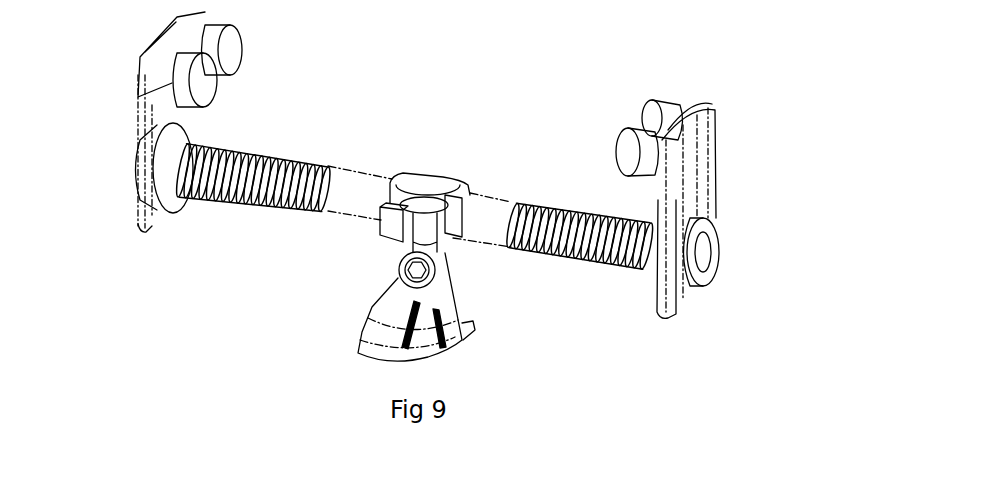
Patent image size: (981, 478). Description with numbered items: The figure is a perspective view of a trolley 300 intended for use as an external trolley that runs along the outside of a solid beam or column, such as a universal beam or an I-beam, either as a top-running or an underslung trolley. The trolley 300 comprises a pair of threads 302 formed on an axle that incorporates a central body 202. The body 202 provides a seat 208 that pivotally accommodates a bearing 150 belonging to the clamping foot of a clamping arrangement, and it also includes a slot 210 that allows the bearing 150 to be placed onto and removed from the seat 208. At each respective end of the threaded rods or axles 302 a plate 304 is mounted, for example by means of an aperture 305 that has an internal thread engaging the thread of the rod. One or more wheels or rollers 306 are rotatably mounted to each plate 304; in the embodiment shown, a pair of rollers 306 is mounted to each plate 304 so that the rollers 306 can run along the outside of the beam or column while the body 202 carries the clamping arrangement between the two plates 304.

The trolley 300 is at (490, 51).
The bearing 150 is at (420, 203).
The threads 302 is at (284, 163).
The body 202 is at (452, 193).
The seat 208 is at (408, 217).
The slot 210 is at (410, 242).
The plate 304 is at (143, 115).
The aperture 305 is at (705, 262).
The rollers 306 is at (226, 23).